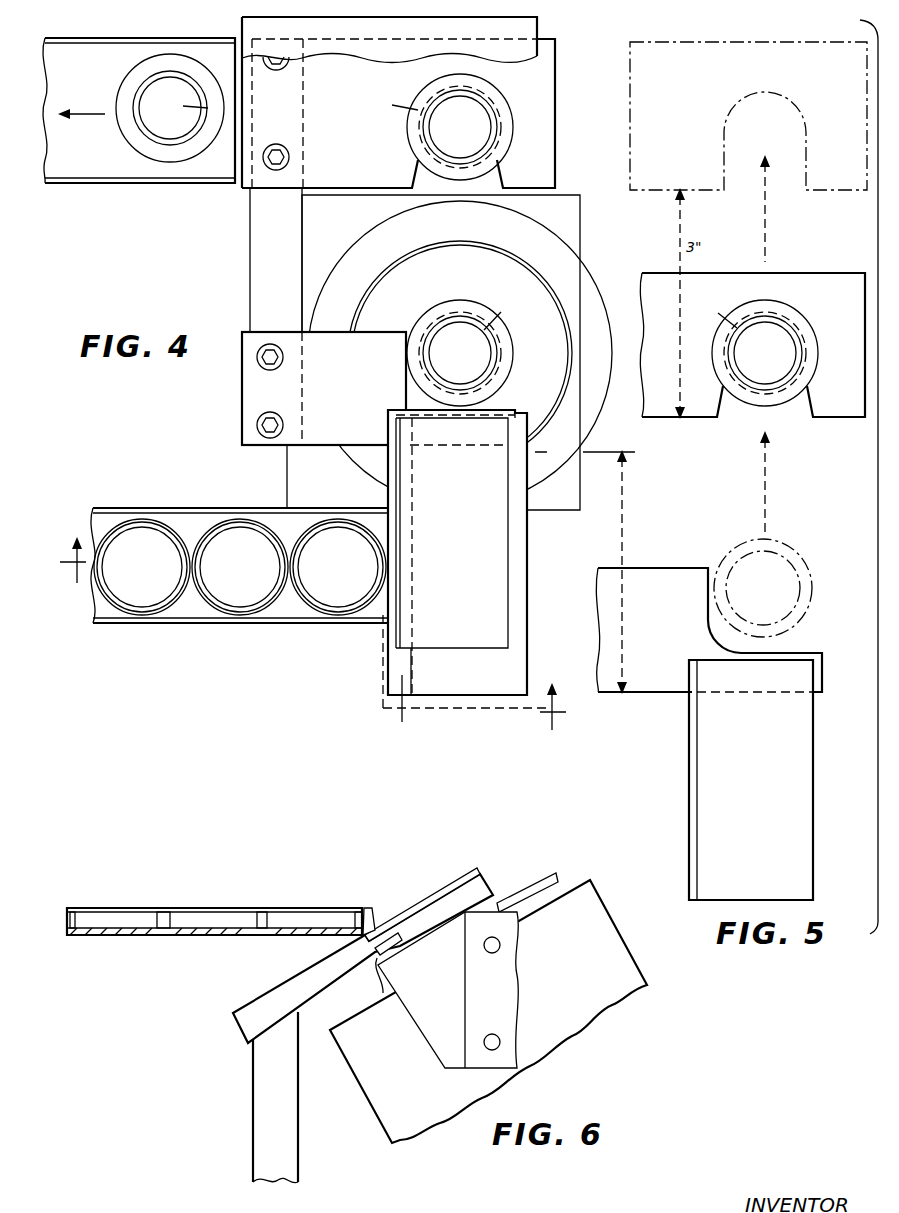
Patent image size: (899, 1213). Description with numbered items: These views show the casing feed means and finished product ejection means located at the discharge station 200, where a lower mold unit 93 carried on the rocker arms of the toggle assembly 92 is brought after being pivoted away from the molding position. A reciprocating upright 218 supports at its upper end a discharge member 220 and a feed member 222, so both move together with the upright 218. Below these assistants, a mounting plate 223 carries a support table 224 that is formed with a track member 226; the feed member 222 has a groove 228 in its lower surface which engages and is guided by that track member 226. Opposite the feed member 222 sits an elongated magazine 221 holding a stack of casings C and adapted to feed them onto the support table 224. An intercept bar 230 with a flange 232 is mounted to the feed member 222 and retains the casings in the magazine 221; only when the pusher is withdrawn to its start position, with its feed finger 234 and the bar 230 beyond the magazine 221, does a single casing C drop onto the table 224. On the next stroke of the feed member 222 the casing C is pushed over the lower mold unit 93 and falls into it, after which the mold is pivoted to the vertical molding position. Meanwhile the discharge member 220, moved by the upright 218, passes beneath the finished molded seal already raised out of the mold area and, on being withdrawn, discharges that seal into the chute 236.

In FIG. 4, the discharge station 200 is at (208, 434).
In FIG. 4, the chute 236 is at (181, 186).
In FIG. 4, the upright 218 is at (262, 267).
In FIG. 6, the upright 218 is at (268, 1085).
In FIG. 4, the discharge member 220 is at (533, 118).
In FIG. 5, the discharge member 220 is at (820, 296).
In FIG. 4, the toggle assembly 92 is at (596, 293).
In FIG. 6, the toggle assembly 92 is at (631, 956).
In FIG. 4, the lower mold unit 93 is at (460, 353).
In FIG. 6, the lower mold unit 93 is at (546, 891).
In FIG. 4, the feed member 222 is at (393, 352).
In FIG. 5, the feed member 222 is at (672, 590).
In FIG. 4, the intercept bar 230 is at (467, 565).
In FIG. 5, the intercept bar 230 is at (751, 780).
In FIG. 6, the intercept bar 230 is at (448, 884).
In FIG. 4, the feed finger 234 is at (519, 416).
In FIG. 5, the feed finger 234 is at (823, 666).
In FIG. 4, the flange 232 is at (402, 580).
In FIG. 5, the flange 232 is at (694, 831).
In FIG. 6, the flange 232 is at (375, 912).
In FIG. 4, the track member 226 is at (400, 712).
In FIG. 6, the track member 226 is at (398, 946).
In FIG. 4, the elongated magazine 221 is at (239, 587).
In FIG. 6, the elongated magazine 221 is at (214, 924).
In FIG. 4, the casing C is at (182, 562).
In FIG. 5, the casing C is at (813, 578).
In FIG. 6, the casing C is at (160, 912).
In FIG. 6, the mounting plate 223 is at (490, 966).
In FIG. 6, the support table 224 is at (278, 1008).
In FIG. 6, the groove 228 is at (385, 992).